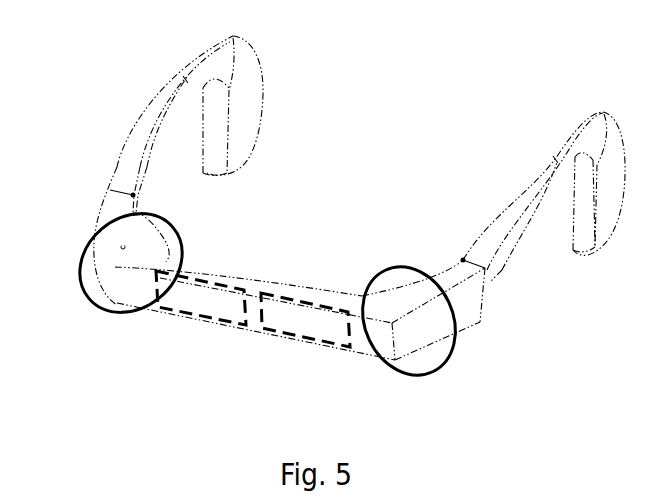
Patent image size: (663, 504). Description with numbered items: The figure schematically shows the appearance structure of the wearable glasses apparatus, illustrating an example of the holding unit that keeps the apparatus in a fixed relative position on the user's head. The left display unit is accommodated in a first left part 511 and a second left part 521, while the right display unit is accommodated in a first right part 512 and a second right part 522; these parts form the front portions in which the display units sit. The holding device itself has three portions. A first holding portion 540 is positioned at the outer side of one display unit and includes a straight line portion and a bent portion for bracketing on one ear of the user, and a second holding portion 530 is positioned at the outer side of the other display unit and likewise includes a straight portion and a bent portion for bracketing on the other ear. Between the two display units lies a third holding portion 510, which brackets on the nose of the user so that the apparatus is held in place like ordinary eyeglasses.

The third holding portion 510 is at (250, 330).
The first left part 511 is at (93, 272).
The first right part 512 is at (447, 357).
The second left part 521 is at (183, 278).
The second right part 522 is at (302, 300).
The second holding portion 530 is at (170, 95).
The first holding portion 540 is at (537, 190).